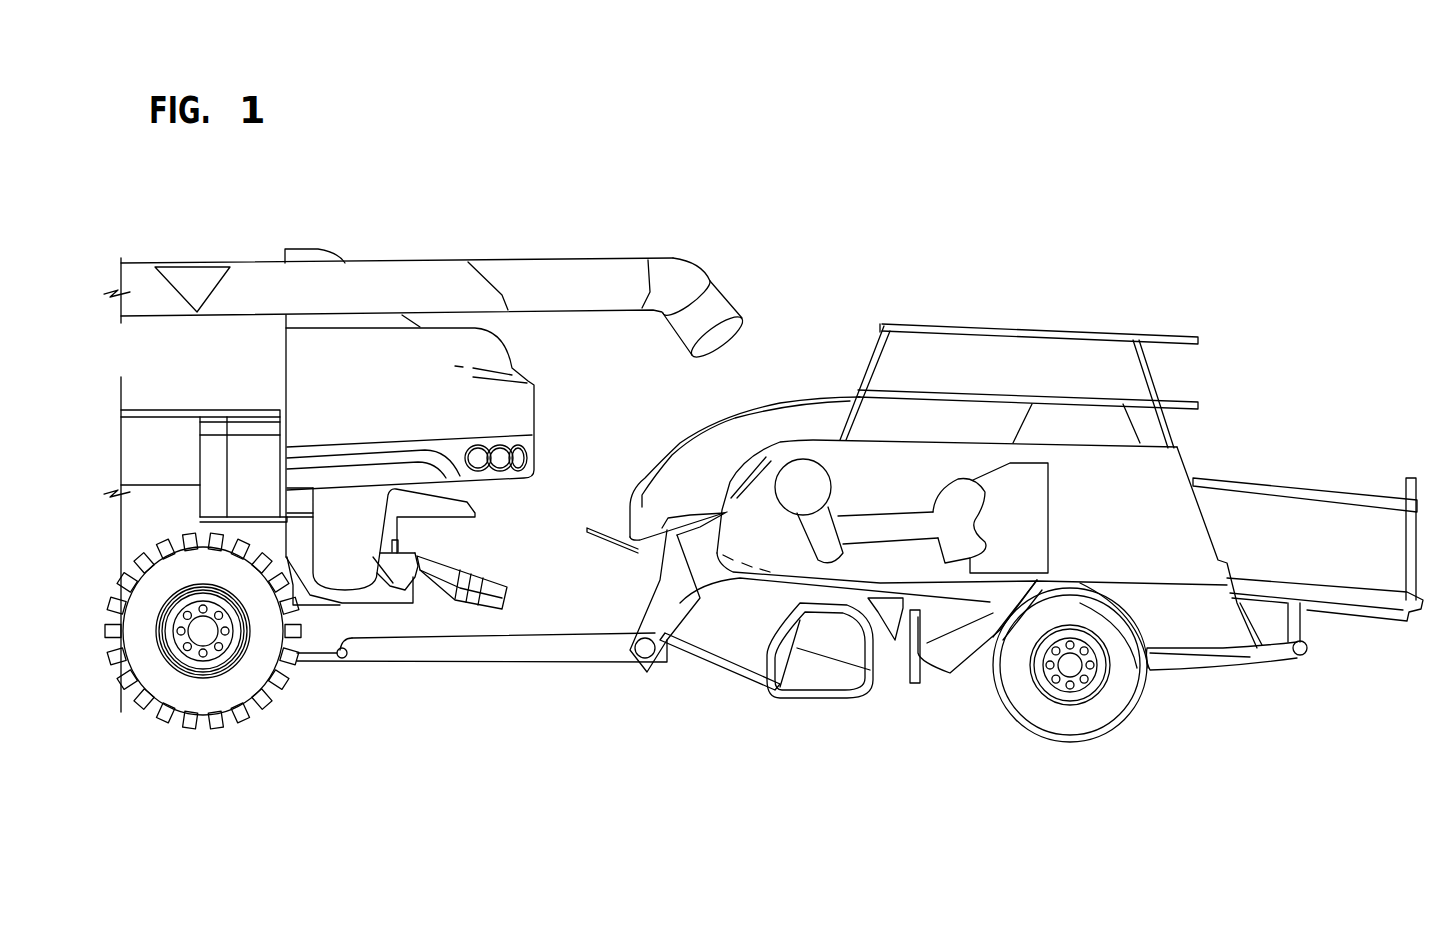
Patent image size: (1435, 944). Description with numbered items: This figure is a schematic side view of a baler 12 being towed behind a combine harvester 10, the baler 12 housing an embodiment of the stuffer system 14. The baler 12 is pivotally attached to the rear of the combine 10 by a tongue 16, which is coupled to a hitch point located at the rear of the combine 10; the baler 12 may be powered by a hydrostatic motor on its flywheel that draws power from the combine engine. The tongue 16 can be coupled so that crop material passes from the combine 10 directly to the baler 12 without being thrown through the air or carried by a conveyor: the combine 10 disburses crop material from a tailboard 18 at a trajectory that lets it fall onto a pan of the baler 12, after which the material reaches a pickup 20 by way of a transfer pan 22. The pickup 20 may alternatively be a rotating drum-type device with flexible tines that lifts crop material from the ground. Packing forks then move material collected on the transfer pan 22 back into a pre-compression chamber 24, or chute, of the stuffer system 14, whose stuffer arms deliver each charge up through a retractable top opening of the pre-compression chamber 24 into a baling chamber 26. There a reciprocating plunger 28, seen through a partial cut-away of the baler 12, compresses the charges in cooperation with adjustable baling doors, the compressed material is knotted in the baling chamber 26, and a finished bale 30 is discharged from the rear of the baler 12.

The combine harvester 10 is at (563, 225).
The baler 12 is at (1199, 313).
The stuffer system 14 is at (955, 708).
The tongue 16 is at (505, 650).
The tailboard 18 is at (468, 570).
The pickup 20 is at (817, 685).
The transfer pan 22 is at (717, 662).
The pre-compression chamber 24 is at (943, 661).
The baling chamber 26 is at (1100, 549).
The reciprocating plunger 28 is at (1052, 490).
The bale 30 is at (1343, 533).